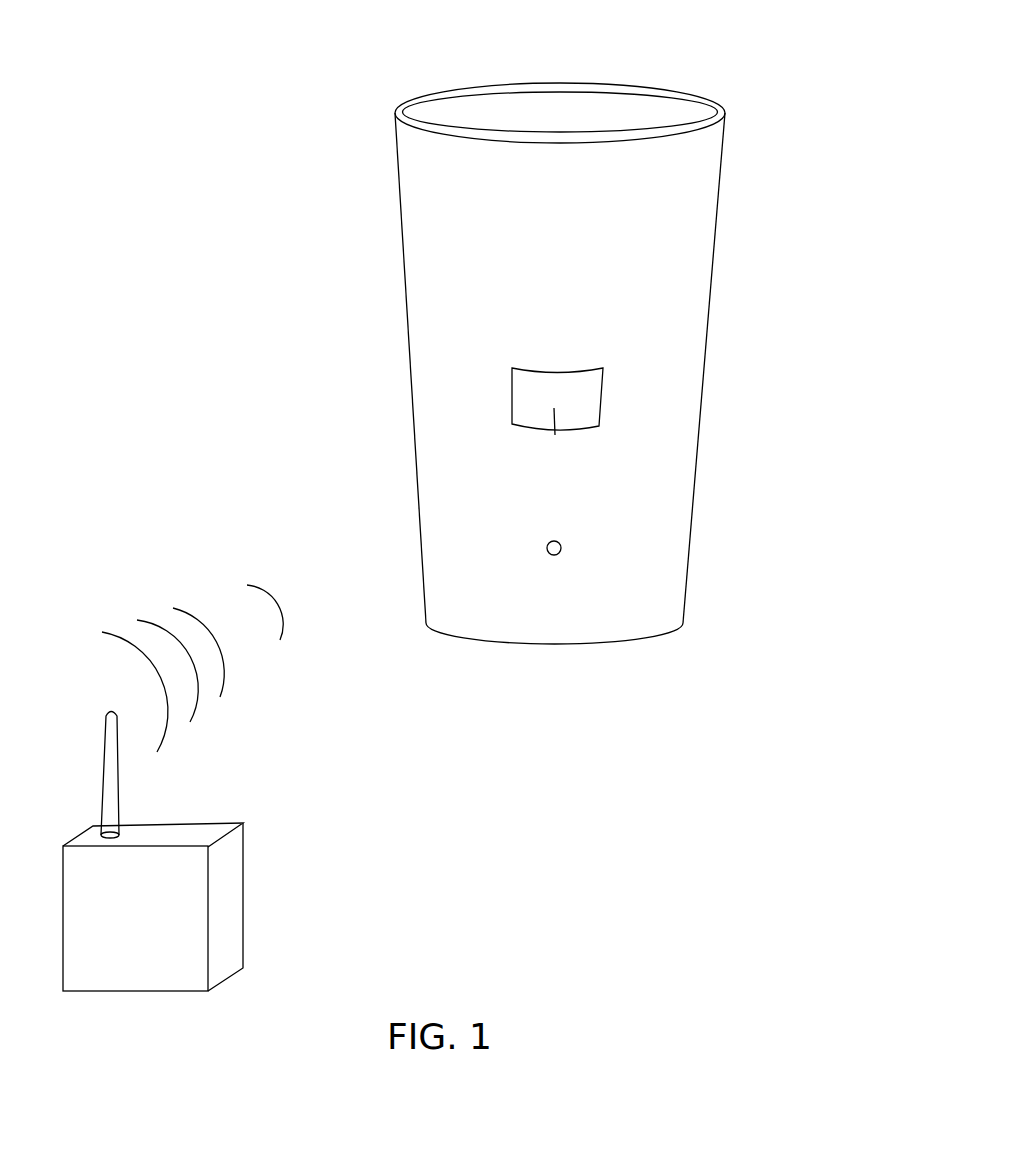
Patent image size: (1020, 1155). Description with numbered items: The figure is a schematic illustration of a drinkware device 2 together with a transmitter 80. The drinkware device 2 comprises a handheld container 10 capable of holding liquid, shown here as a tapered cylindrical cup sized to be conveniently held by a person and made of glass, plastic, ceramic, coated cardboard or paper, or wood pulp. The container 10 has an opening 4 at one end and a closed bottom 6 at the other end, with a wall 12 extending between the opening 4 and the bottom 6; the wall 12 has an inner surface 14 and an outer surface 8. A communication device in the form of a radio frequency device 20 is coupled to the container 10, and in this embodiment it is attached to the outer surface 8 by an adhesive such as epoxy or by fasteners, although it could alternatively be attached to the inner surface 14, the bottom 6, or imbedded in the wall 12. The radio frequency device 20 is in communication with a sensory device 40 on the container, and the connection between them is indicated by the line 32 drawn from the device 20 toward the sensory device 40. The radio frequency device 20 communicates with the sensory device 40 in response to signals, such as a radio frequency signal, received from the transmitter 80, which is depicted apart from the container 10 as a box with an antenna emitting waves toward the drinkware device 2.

The drinkware device 2 is at (727, 326).
The opening 4 is at (597, 117).
The closed bottom 6 is at (653, 637).
The outer surface 8 is at (675, 433).
The handheld container 10 is at (718, 212).
The wall 12 is at (668, 507).
The inner surface 14 is at (682, 117).
The radio frequency (RF) device 20 is at (500, 398).
The lead wire 32 is at (555, 435).
The sensory device 40 is at (557, 555).
The transmitter 80 is at (258, 889).